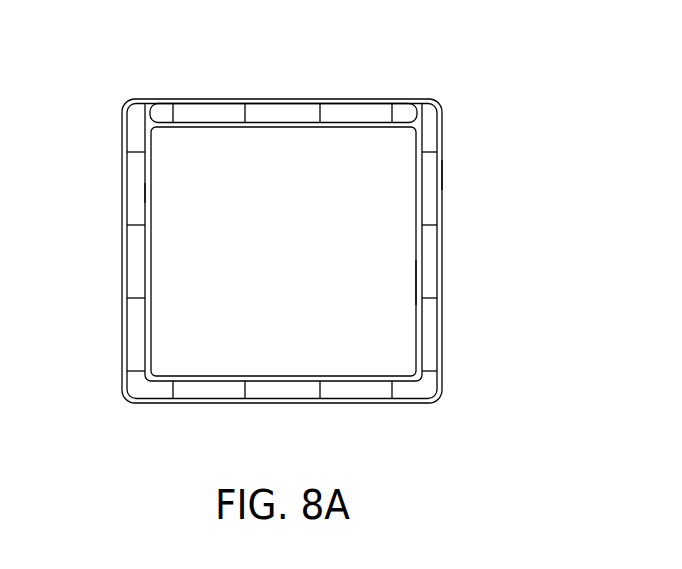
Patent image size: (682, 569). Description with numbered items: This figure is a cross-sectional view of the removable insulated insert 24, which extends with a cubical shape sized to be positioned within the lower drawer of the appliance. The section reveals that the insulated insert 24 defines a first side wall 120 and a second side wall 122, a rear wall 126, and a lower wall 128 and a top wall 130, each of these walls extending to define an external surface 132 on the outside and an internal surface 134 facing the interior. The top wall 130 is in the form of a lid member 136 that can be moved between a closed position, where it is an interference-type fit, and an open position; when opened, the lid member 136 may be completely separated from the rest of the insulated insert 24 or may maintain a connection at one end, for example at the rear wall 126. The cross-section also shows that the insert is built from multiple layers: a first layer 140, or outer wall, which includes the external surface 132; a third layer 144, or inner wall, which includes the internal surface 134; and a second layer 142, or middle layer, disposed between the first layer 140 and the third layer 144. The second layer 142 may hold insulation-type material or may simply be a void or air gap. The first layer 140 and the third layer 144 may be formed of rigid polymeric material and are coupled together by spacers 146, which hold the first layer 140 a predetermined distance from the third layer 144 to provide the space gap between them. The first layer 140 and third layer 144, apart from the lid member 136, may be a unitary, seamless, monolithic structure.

The insulated insert 24 is at (478, 62).
The first side wall 120 is at (108, 265).
The second side wall 122 is at (458, 252).
The rear wall 126 is at (337, 219).
The lower wall 128 is at (338, 420).
The top wall 130 is at (322, 86).
The external surface 132 is at (443, 173).
The internal surface 134 is at (416, 282).
The lid member 136 is at (370, 100).
The first layer 140 is at (123, 178).
The second layer 142 is at (138, 193).
The third layer 144 is at (152, 272).
The spacers 146 is at (136, 300).